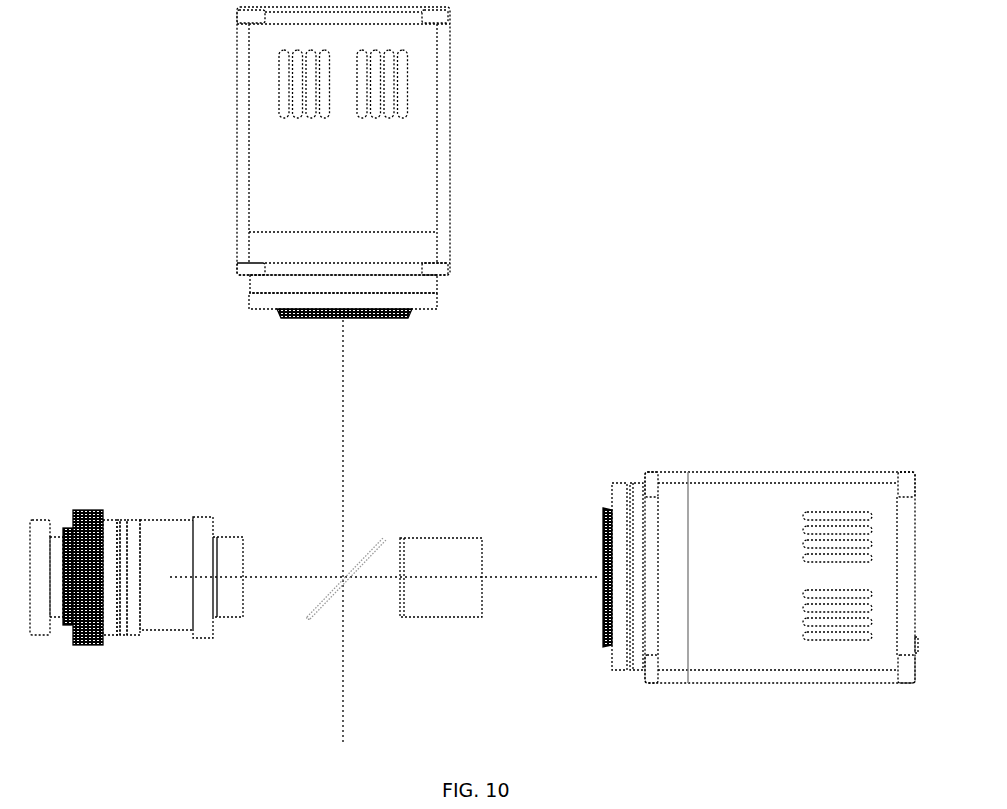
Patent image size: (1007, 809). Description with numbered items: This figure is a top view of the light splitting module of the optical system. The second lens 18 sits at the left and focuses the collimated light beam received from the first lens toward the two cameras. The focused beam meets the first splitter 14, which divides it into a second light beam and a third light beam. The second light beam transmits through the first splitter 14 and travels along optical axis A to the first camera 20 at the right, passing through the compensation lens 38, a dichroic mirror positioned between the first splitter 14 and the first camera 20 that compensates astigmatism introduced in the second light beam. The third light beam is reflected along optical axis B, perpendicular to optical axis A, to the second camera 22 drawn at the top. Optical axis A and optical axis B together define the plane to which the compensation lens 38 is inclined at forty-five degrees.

The second camera 22 is at (427, 198).
The first camera 20 is at (742, 493).
The second lens 18 is at (162, 532).
The first splitter 14 is at (280, 613).
The compensation lens 38 is at (455, 608).
The optical axis of the second light beam A is at (548, 573).
The optical axis of the third light beam B is at (343, 440).